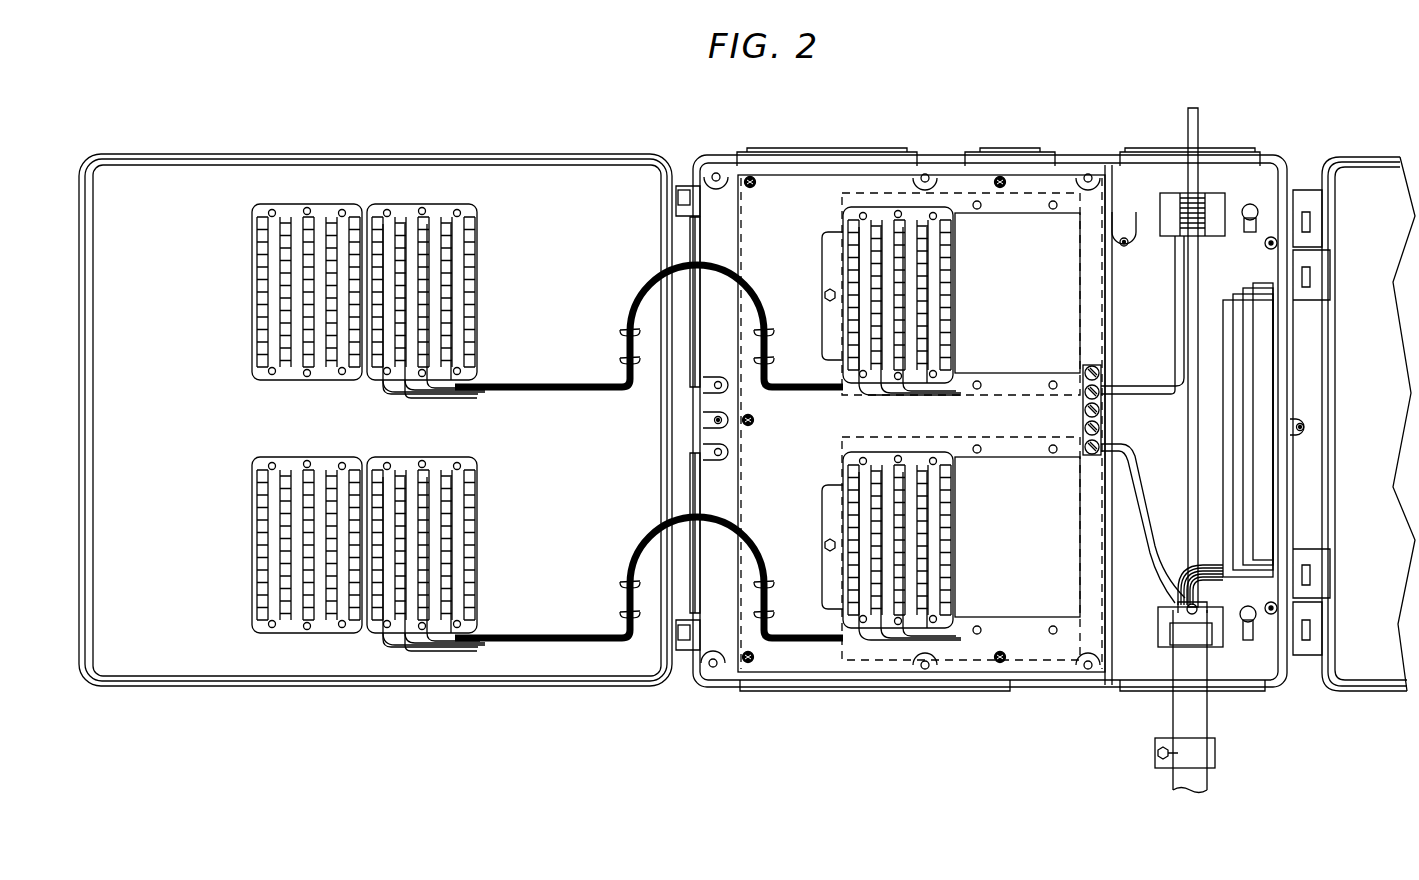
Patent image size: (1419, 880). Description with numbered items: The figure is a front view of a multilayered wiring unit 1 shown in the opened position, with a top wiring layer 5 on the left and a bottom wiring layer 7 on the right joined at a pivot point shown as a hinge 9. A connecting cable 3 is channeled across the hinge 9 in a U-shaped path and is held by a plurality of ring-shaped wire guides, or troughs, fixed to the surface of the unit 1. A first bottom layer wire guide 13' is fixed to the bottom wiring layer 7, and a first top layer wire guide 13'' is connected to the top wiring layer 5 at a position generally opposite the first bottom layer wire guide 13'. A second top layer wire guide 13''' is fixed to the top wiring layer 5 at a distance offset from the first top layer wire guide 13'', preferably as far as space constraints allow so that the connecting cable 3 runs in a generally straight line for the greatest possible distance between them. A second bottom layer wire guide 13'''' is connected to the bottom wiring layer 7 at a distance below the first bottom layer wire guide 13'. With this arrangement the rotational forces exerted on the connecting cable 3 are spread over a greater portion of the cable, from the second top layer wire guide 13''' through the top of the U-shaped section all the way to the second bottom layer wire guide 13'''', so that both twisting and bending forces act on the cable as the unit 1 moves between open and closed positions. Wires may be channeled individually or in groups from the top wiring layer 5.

The multilayered wiring unit 1 is at (470, 126).
The connecting cable 3 is at (545, 648).
The top wiring layer 5 is at (458, 686).
The bottom wiring layer 7 is at (812, 690).
The hinge 9 is at (683, 662).
The first bottom layer wire guide 13' is at (776, 294).
The first top layer wire guide 13'' is at (599, 307).
The second top layer wire guide 13''' is at (581, 349).
The second bottom layer wire guide 13'''' is at (787, 401).